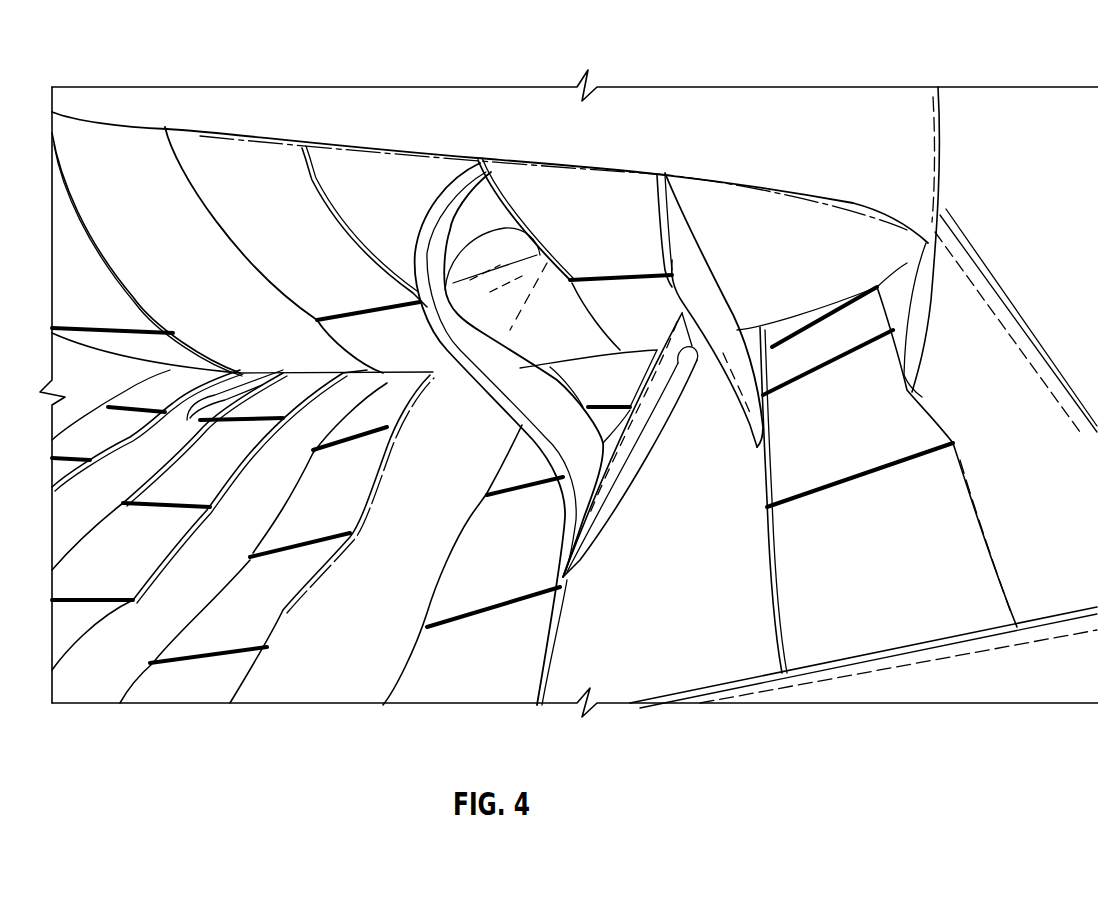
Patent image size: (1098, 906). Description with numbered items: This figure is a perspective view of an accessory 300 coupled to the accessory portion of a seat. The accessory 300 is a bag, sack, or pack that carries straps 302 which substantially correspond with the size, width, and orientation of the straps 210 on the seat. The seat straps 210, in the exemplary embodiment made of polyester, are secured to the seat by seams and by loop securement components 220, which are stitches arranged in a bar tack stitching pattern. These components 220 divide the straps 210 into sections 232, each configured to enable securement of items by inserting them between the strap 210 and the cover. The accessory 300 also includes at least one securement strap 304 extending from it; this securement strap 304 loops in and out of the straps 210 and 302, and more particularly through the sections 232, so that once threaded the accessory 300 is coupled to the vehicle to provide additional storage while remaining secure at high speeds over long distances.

The accessory 300 is at (830, 167).
The straps 302 is at (297, 180).
The securement strap 304 is at (447, 193).
The straps 210 is at (527, 657).
The loop securement components 220 is at (790, 500).
The sections 232 is at (482, 530).